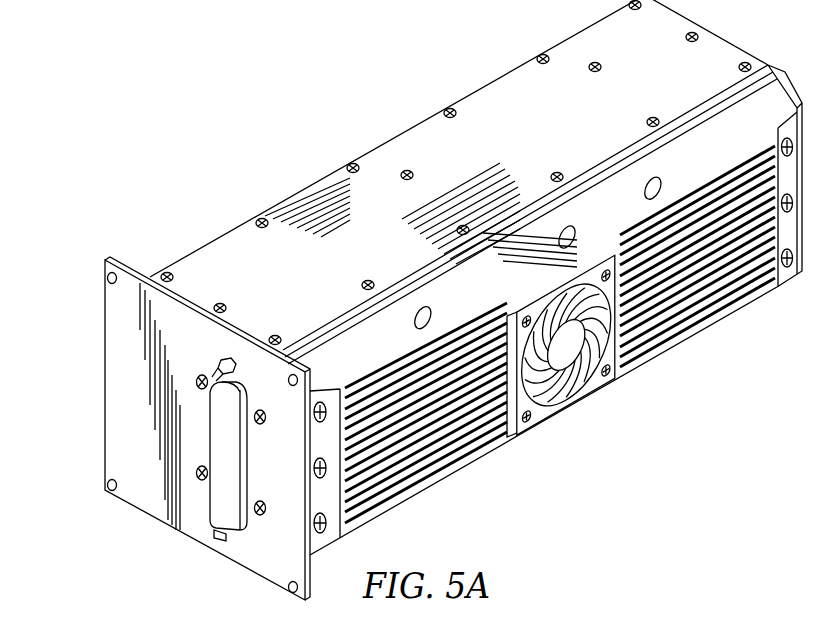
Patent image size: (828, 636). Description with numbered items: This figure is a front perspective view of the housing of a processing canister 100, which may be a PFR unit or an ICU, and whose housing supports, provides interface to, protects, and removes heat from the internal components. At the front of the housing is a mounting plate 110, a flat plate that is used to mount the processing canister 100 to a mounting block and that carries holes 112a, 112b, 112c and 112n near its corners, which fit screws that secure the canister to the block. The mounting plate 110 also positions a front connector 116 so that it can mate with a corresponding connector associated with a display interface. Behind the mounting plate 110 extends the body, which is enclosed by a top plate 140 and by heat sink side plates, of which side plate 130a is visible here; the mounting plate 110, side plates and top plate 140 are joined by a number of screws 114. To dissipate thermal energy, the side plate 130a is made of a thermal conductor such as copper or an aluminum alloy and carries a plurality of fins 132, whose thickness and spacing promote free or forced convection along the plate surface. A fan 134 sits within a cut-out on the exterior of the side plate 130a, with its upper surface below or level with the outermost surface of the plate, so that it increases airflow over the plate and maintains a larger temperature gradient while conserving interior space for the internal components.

The processing canister 100 is at (258, 85).
The mounting plate 110 is at (240, 553).
The hole 112a is at (290, 590).
The hole 112b is at (108, 490).
The hole 112c is at (107, 280).
The hole 112n is at (289, 381).
The screws 114 is at (543, 68).
The front connector 116 is at (216, 512).
The heat sink side plate 130a is at (421, 463).
The fins 132 is at (672, 305).
The fan 134 is at (586, 374).
The top plate 140 is at (406, 143).